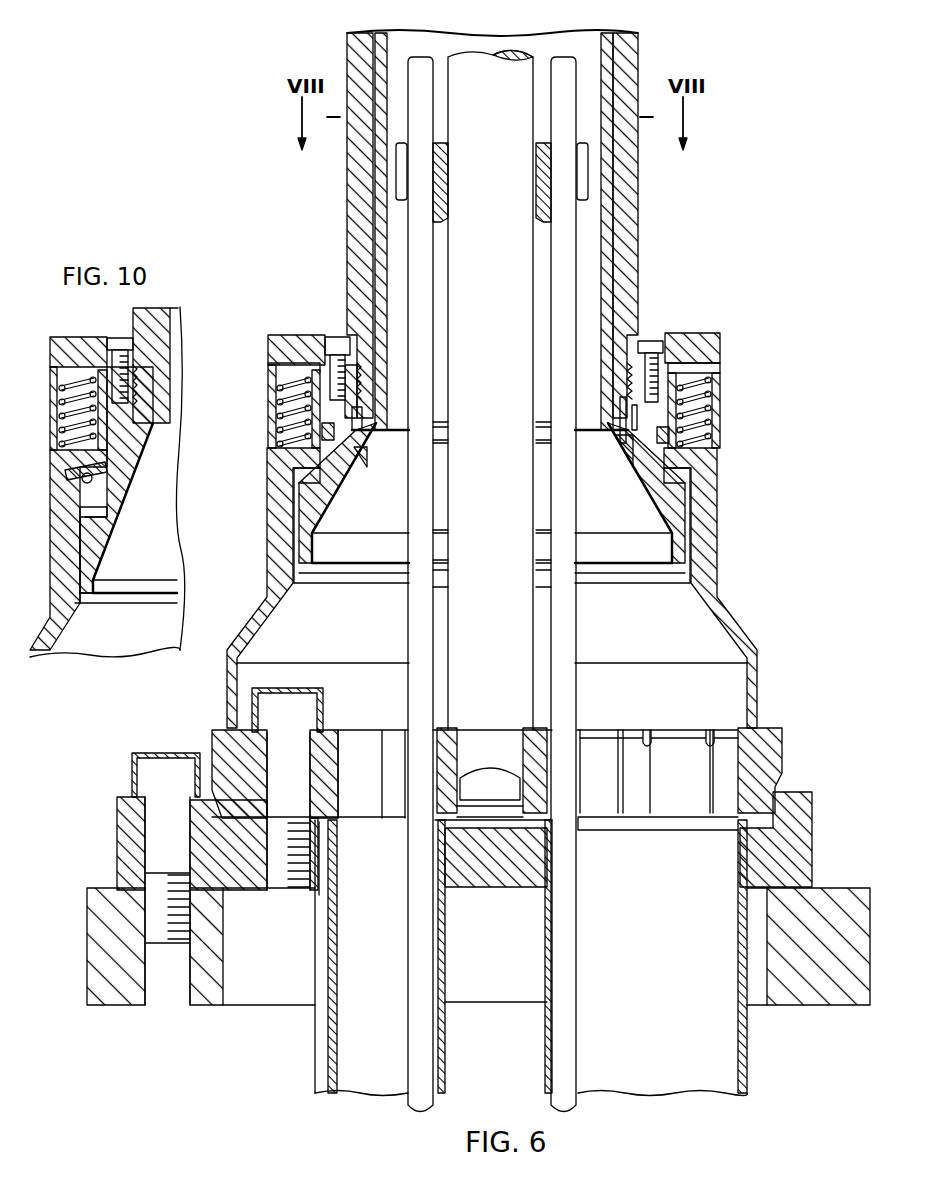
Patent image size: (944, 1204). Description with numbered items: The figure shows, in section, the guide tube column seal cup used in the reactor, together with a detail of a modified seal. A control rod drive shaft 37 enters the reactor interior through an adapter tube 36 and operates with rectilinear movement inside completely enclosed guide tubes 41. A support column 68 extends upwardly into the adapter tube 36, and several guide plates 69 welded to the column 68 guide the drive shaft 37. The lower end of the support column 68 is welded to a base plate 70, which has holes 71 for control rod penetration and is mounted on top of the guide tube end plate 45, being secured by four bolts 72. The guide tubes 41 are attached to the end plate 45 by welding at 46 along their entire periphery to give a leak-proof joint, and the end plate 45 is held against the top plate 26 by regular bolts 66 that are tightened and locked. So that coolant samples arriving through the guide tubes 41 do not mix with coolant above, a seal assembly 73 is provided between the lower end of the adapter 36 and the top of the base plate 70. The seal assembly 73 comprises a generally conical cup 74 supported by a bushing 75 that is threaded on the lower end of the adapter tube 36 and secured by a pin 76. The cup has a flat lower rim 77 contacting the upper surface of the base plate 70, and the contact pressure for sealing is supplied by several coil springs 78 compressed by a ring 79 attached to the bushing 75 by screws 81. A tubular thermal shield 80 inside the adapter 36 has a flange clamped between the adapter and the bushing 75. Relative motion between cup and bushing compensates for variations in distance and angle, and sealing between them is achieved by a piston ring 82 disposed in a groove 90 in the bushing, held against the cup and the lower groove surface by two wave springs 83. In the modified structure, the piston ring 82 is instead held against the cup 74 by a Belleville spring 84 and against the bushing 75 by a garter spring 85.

In FIG. 6, the support column 68 is at (485, 57).
In FIG. 6, the control rod drive shaft 37 is at (560, 57).
In FIG. 6, the guide plate 69 is at (395, 172).
In FIG. 6, the adapter tube 36 is at (630, 207).
In FIG. 6, the tubular thermal shield 80 is at (610, 252).
In FIG. 6, the screw 81 is at (655, 340).
In FIG. 6, the ring 79 is at (718, 338).
In FIG. 6, the coil spring 78 is at (712, 378).
In FIG. 6, the groove 90 is at (627, 415).
In FIG. 6, the pin 76 is at (618, 447).
In FIG. 6, the wave spring 83 is at (663, 443).
In FIG. 6, the piston ring 82 is at (672, 474).
In FIG. 10, the piston ring 82 is at (92, 486).
In FIG. 6, the bushing 75 is at (676, 515).
In FIG. 10, the bushing 75 is at (145, 476).
In FIG. 6, the seal assembly 73 is at (760, 527).
In FIG. 6, the conical cup 74 is at (718, 548).
In FIG. 10, the conical cup 74 is at (62, 565).
In FIG. 6, the bolt 72 is at (290, 697).
In FIG. 6, the flat lower rim 77 is at (228, 722).
In FIG. 6, the hole 71 is at (712, 733).
In FIG. 6, the bolt 66 is at (166, 760).
In FIG. 6, the base plate 70 is at (783, 750).
In FIG. 6, the weld 46 is at (320, 822).
In FIG. 6, the end plate 45 is at (812, 815).
In FIG. 6, the top plate 26 is at (840, 890).
In FIG. 6, the guide tube 41 is at (328, 1032).
In FIG. 10, the Belleville spring 84 is at (63, 470).
In FIG. 10, the garter spring 85 is at (92, 484).